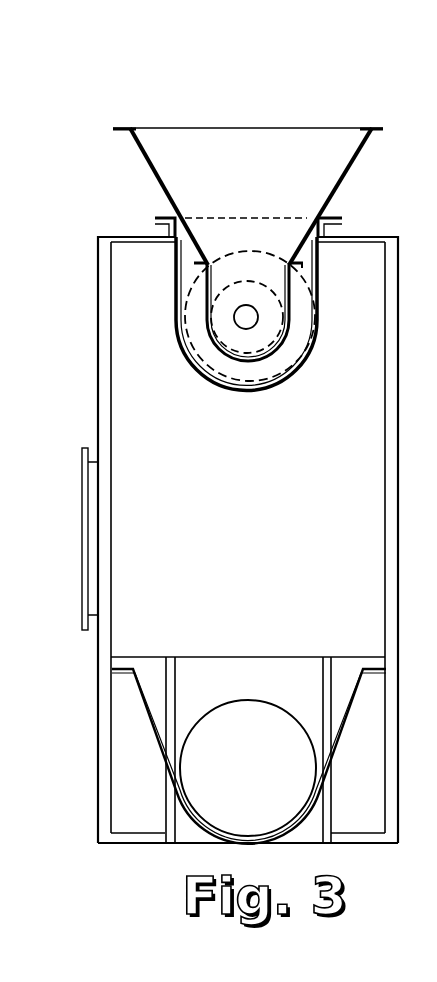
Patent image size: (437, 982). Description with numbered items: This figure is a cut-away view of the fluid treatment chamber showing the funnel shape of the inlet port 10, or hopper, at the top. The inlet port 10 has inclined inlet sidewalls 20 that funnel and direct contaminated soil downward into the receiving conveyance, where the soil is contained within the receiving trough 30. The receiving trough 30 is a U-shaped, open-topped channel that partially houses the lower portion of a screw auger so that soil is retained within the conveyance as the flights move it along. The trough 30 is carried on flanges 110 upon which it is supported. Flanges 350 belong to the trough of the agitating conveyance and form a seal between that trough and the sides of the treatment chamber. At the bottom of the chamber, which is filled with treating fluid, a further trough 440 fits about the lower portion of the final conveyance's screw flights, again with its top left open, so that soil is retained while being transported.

The inlet port 10 is at (300, 118).
The inlet sidewalls 20 is at (355, 156).
The flanges 350 is at (155, 218).
The receiving trough 30 is at (290, 302).
The flanges 110 is at (200, 263).
The trough 440 is at (343, 732).